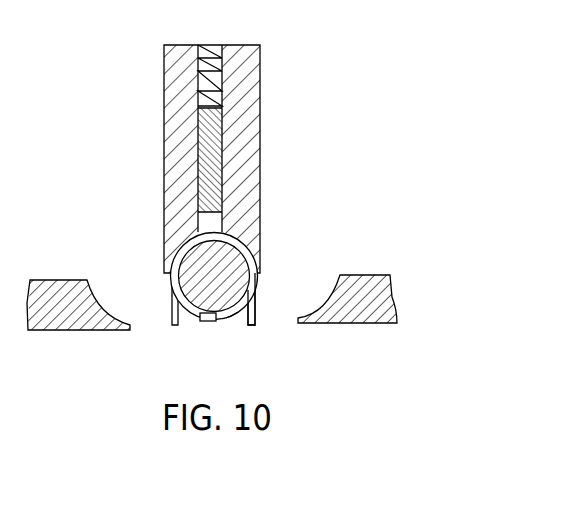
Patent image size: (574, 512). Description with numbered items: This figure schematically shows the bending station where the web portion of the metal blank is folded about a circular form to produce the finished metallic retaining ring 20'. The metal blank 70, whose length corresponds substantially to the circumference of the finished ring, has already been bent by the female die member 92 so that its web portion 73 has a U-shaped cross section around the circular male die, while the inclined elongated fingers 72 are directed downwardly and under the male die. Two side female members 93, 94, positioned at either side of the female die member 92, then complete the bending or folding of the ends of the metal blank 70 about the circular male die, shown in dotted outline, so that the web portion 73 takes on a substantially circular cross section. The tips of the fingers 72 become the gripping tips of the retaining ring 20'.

The female die member 92 is at (257, 183).
The metal blank 70 is at (253, 240).
The web portion 73 is at (258, 283).
The elongated fingers 72 is at (240, 318).
The retaining ring 20' is at (208, 301).
The side female member 93 is at (97, 322).
The side female member 94 is at (393, 300).